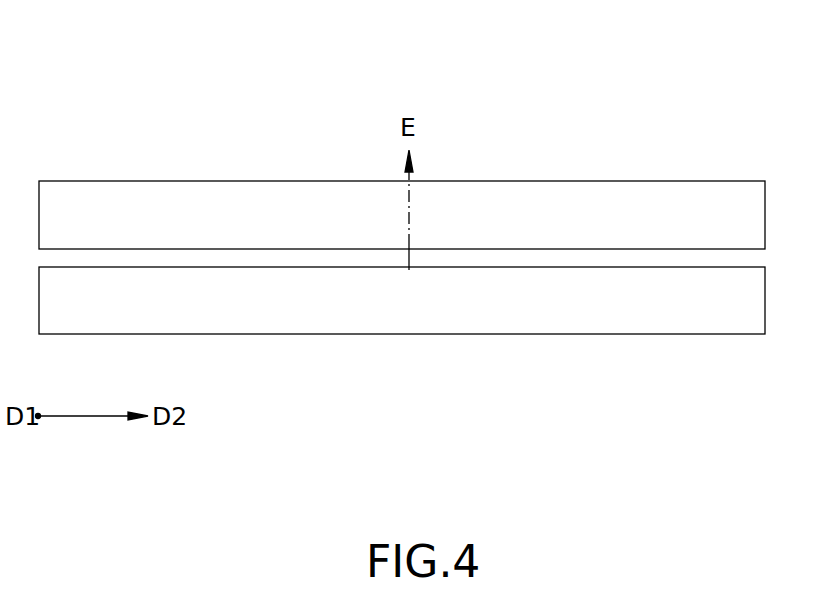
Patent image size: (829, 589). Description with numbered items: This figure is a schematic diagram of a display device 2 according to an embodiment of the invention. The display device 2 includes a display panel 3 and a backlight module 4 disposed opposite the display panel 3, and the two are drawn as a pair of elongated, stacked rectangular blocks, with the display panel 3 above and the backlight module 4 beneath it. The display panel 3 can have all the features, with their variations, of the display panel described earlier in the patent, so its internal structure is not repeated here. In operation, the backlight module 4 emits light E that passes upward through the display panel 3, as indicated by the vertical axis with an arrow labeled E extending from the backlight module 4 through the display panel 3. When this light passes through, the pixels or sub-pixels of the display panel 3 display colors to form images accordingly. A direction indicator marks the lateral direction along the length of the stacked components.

The display device 2 is at (160, 67).
The display panel 3 is at (765, 212).
The backlight module 4 is at (765, 309).